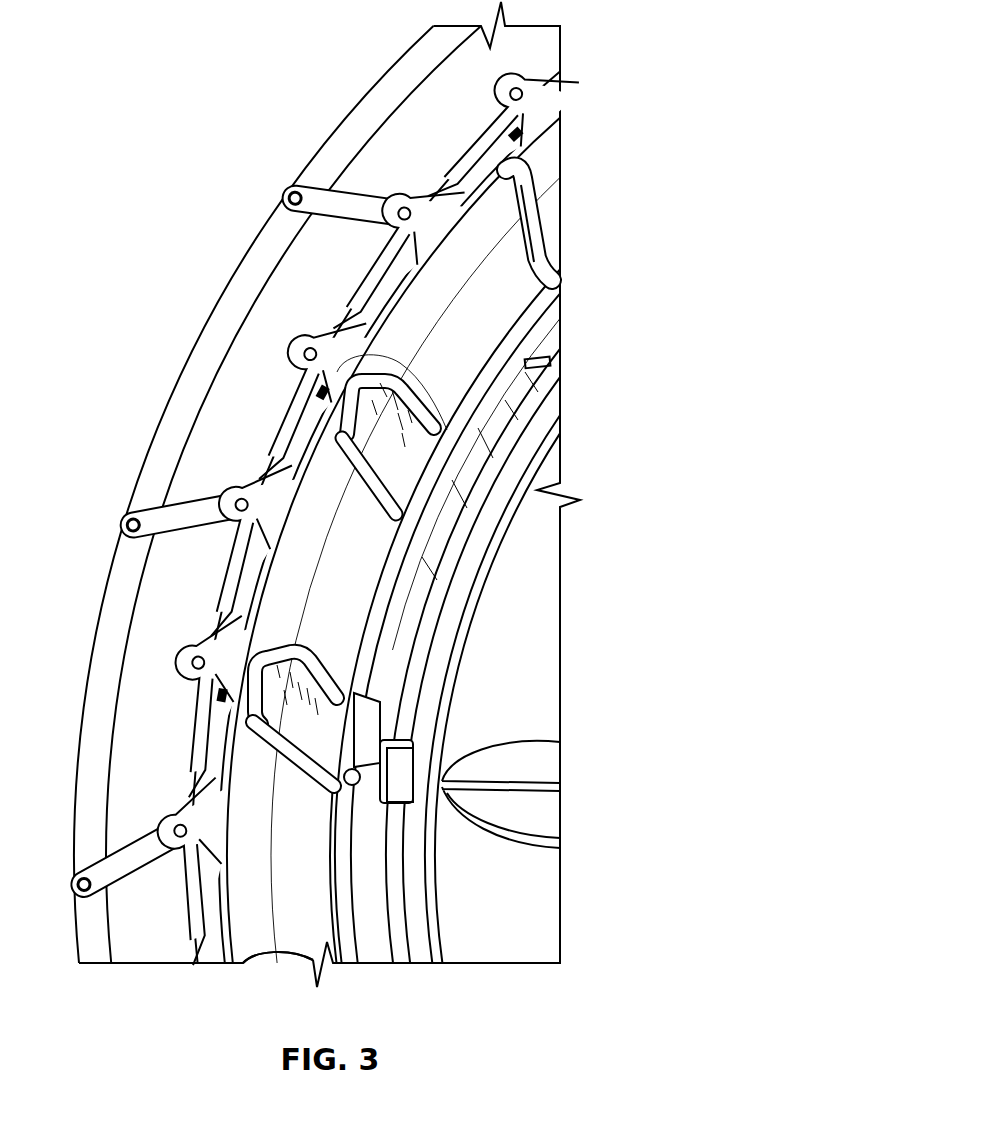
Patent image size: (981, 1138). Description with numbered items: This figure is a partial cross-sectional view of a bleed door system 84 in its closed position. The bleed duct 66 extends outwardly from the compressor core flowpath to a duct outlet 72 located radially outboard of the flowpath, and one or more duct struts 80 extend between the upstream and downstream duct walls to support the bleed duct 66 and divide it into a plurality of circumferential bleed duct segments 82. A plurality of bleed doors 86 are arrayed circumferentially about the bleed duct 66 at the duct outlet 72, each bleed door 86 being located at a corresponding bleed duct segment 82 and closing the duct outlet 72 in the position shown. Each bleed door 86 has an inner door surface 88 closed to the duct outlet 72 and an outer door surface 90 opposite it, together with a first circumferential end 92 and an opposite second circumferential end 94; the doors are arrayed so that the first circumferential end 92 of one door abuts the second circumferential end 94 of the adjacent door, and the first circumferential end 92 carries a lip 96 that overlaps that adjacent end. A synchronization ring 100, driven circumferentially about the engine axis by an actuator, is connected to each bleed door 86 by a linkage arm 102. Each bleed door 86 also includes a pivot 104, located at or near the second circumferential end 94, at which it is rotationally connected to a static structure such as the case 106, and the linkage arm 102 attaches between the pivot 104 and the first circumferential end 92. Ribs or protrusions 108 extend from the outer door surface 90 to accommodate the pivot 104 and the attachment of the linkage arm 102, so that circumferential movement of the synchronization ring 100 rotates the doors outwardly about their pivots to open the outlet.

The bleed duct 66 is at (523, 277).
The duct outlet 72 is at (487, 207).
The duct strut 80 is at (328, 733).
The bleed duct segment 82 is at (503, 296).
The bleed door system 84 is at (603, 30).
The bleed door 86 is at (390, 292).
The inner door surface 88 is at (276, 538).
The outer door surface 90 is at (243, 582).
The first circumferential end 92 is at (350, 478).
The second circumferential end 94 is at (224, 712).
The lip 96 is at (383, 358).
The synchronization ring 100 is at (378, 101).
The linkage arm 102 is at (343, 207).
The pivot 104 is at (203, 651).
The case 106 is at (264, 934).
The ribs or protrusions 108 is at (196, 821).